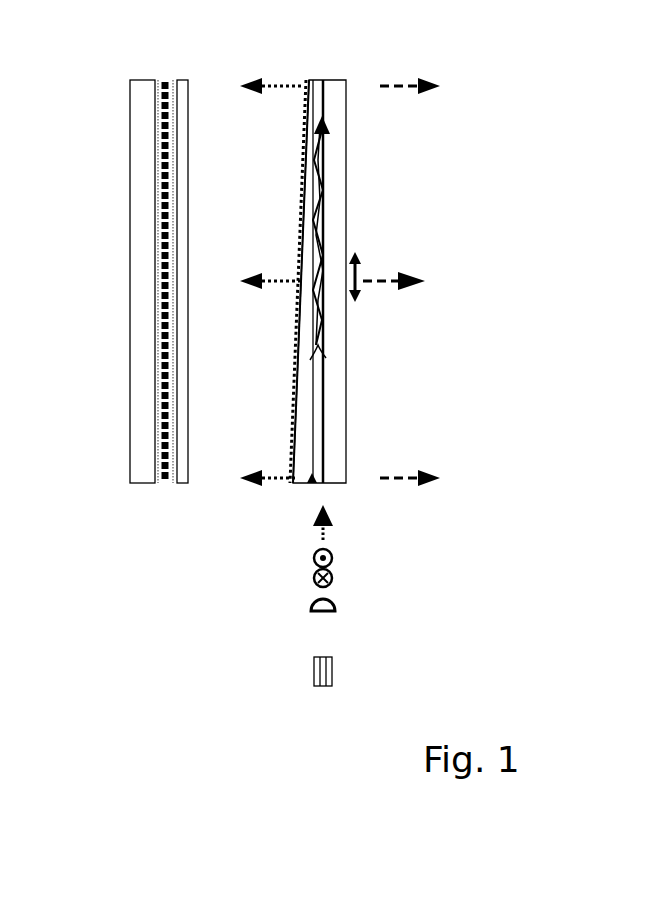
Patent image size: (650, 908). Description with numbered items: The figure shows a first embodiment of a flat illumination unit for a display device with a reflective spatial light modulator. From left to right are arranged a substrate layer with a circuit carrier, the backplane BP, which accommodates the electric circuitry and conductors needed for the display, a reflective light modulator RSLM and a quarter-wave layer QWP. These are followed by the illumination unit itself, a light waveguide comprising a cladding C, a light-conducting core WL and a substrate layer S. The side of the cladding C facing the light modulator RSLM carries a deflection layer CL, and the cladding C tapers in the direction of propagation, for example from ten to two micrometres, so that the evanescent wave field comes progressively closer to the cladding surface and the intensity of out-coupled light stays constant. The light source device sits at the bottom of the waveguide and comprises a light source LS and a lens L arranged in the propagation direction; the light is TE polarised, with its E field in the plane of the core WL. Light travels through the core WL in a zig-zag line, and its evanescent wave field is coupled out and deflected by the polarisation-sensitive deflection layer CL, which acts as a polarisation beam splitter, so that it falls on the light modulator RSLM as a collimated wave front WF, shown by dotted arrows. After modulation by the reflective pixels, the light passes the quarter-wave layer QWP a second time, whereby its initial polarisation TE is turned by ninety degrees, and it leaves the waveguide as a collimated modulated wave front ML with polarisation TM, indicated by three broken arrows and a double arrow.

The backplane BP is at (128, 118).
The reflective light modulator RSLM is at (165, 487).
The λ/4 layer QWP is at (185, 487).
The substrate layer S is at (345, 78).
The deflection layer CL is at (305, 121).
The light-conducting core WL is at (333, 425).
The wave front WF is at (251, 282).
The modulated wave front ML is at (414, 282).
The TM polarisation TM is at (396, 277).
The cladding C is at (311, 476).
The TE polarisation TE is at (336, 560).
The lens L is at (308, 606).
The light source LS is at (339, 674).